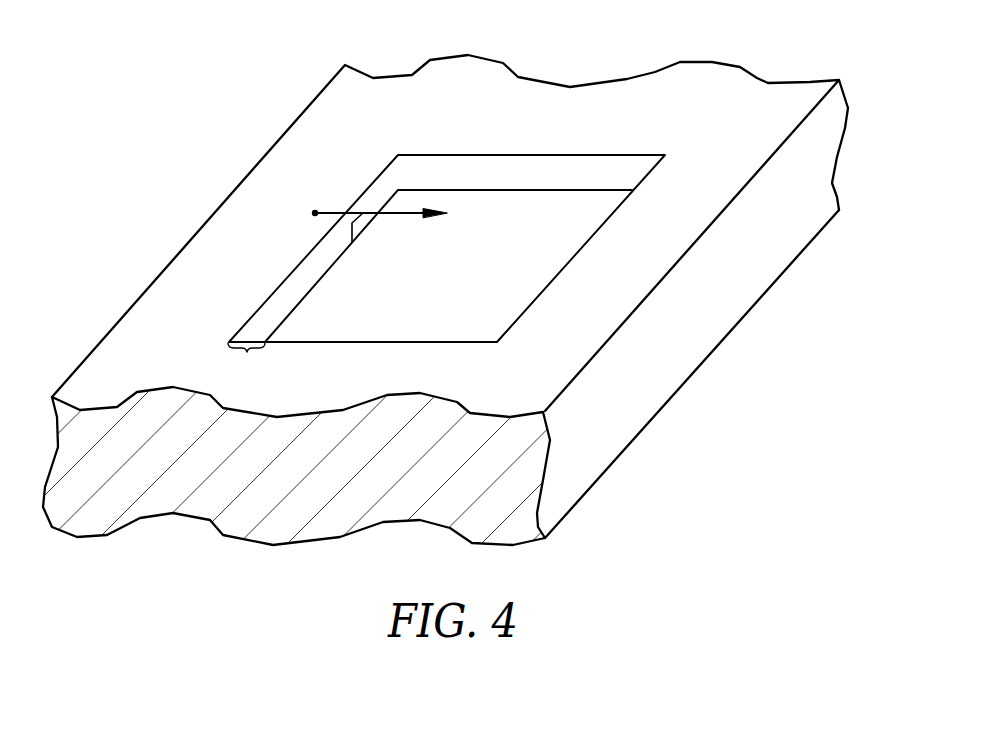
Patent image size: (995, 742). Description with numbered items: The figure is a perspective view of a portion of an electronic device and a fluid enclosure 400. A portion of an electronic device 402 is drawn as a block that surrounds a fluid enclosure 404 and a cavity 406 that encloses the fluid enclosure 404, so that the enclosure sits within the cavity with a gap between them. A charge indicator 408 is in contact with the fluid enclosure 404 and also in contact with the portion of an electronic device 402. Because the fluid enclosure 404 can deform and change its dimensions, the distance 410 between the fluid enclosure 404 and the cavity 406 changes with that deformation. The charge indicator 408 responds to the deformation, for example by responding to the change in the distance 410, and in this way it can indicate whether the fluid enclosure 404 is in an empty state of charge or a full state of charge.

The fluid enclosure and electronic device portion 400 is at (166, 168).
The portion of an electronic device 402 is at (712, 349).
The fluid enclosure 404 is at (570, 263).
The cavity 406 is at (517, 162).
The charge indicator 408 is at (314, 212).
The distance 410 is at (245, 365).